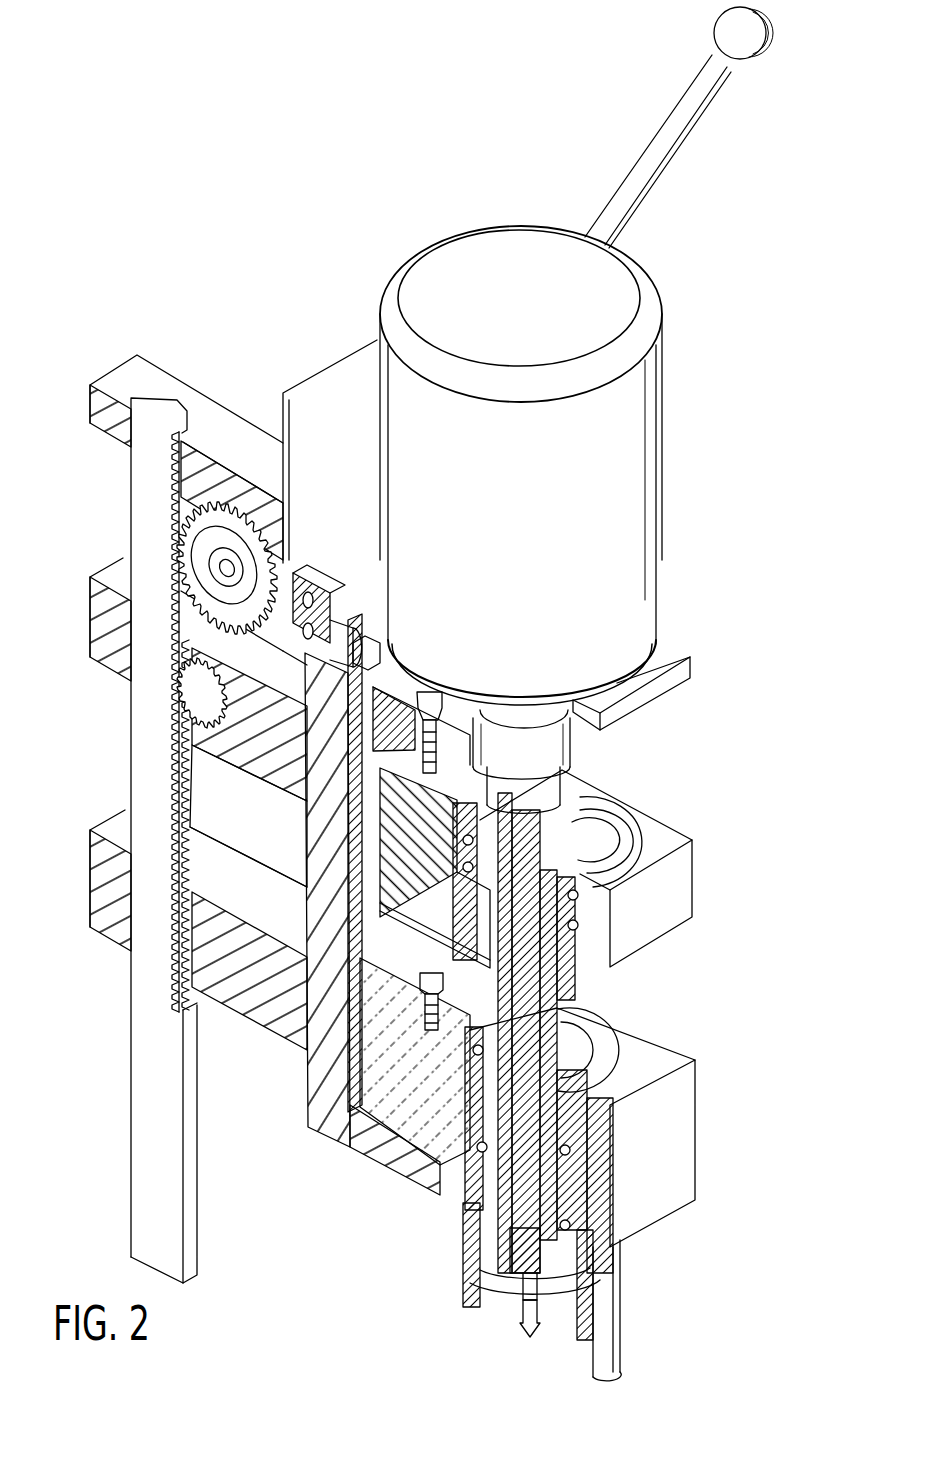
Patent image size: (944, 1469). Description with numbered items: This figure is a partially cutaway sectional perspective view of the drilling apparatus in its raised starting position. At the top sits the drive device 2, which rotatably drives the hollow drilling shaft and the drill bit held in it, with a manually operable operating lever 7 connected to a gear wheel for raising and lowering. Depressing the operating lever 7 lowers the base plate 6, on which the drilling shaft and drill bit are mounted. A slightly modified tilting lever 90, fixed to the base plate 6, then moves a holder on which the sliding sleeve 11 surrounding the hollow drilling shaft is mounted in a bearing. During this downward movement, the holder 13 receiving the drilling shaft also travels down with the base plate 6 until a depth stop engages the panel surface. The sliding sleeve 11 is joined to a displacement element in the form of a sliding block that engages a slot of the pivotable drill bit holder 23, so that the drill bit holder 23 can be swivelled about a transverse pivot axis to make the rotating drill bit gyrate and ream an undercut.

The operating lever 7 is at (632, 174).
The drive device 2 is at (521, 550).
The tilting lever 90 is at (363, 893).
The base plate 6 is at (333, 1100).
The sliding sleeve 11 is at (557, 973).
The drill bit holder 23 is at (613, 1060).
The holder 13 is at (652, 1203).